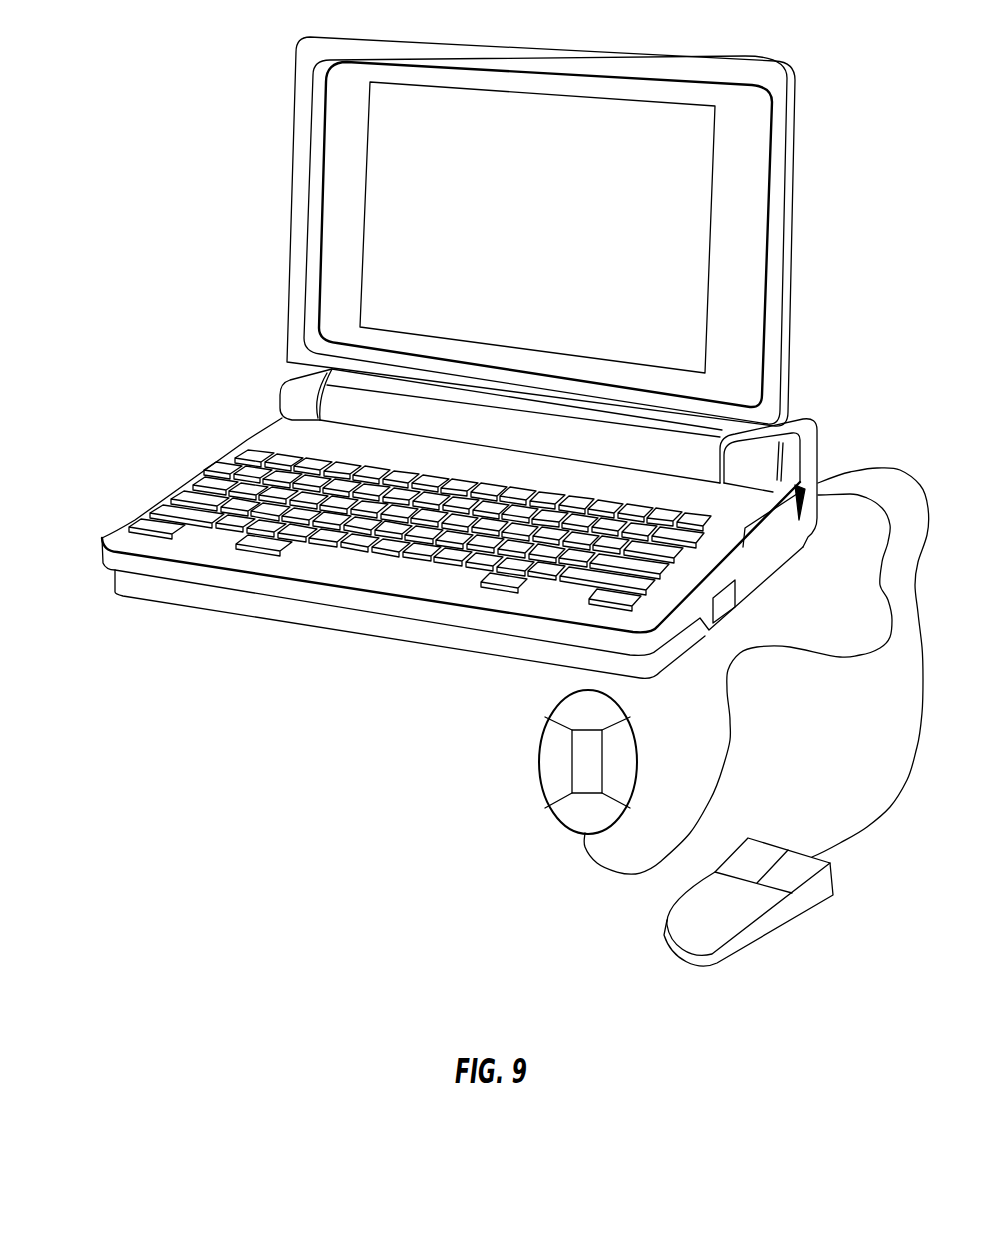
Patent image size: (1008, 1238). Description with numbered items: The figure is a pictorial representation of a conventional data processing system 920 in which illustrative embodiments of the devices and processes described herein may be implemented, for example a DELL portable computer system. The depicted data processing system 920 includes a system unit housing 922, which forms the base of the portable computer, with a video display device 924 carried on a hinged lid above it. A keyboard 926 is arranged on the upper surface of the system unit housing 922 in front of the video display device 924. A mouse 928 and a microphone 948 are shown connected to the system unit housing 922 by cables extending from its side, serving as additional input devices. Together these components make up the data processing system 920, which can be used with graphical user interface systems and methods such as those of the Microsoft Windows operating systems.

The data processing system 920 is at (123, 448).
The system unit housing 922 is at (290, 441).
The video display device 924 is at (527, 112).
The keyboard 926 is at (265, 455).
The mouse 928 is at (778, 918).
The microphone 948 is at (538, 772).